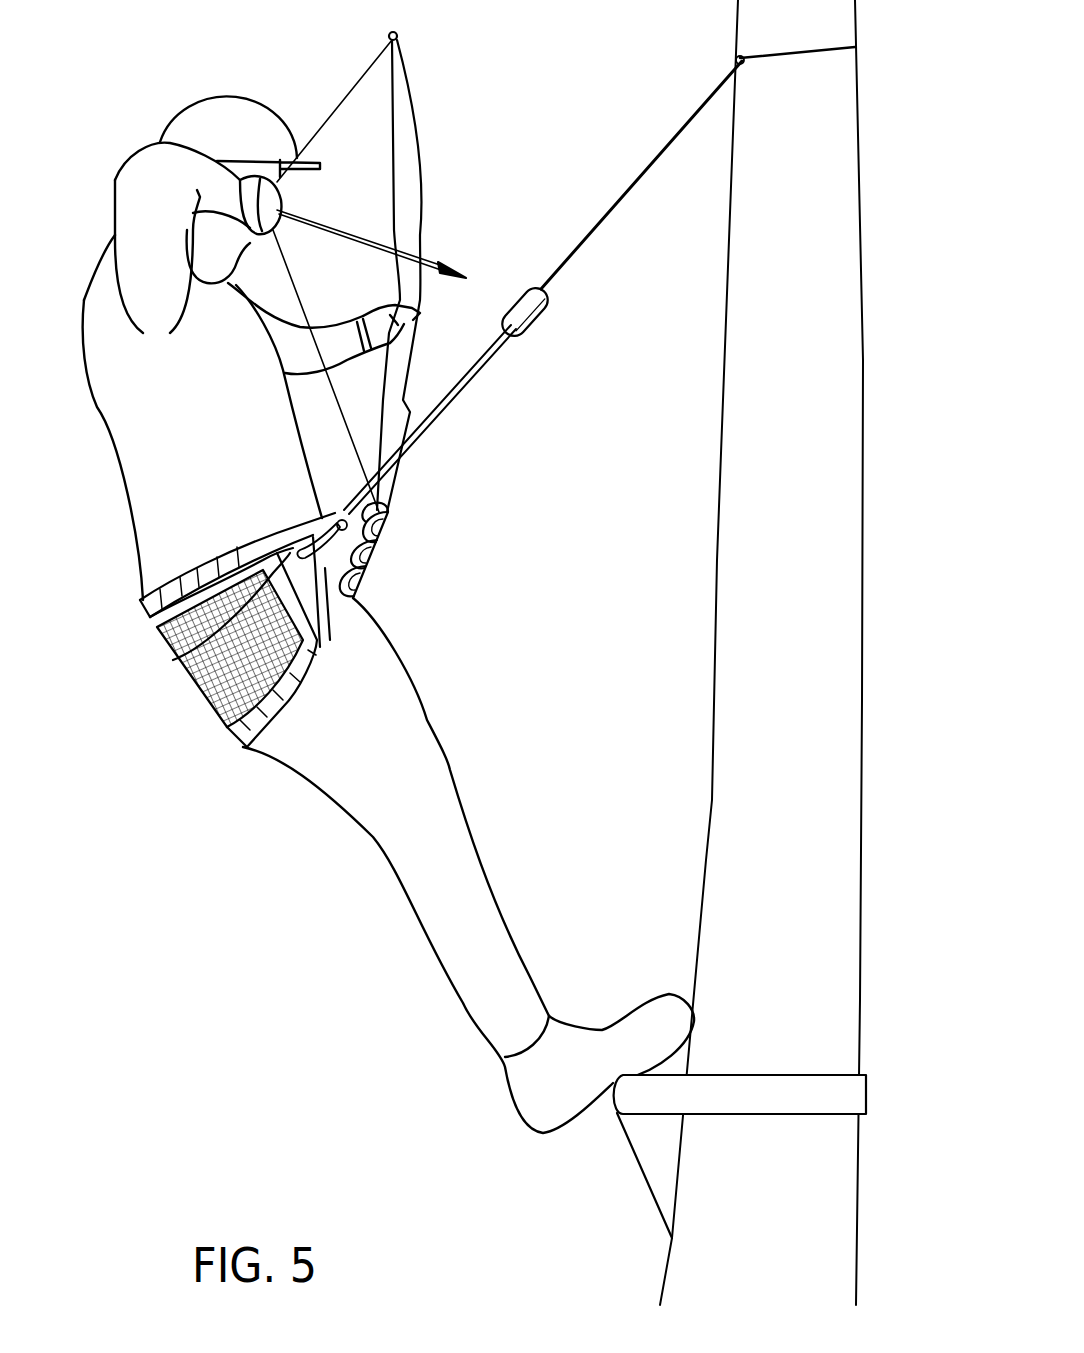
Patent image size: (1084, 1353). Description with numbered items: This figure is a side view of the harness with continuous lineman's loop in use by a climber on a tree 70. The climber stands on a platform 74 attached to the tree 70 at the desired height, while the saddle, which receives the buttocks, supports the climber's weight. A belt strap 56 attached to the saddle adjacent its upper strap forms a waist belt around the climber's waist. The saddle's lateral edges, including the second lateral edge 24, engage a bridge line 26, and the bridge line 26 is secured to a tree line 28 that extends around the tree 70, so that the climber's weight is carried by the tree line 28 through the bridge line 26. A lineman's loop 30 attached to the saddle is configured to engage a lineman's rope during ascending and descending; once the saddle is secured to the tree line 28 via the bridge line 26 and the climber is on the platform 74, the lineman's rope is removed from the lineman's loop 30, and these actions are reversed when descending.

The second lateral edge 24 is at (387, 552).
The bridge line 26 is at (468, 393).
The tree line 28 is at (612, 207).
The lineman's loop 30 is at (320, 595).
The belt strap 56 is at (178, 660).
The tree 70 is at (845, 663).
The platform 74 is at (853, 1095).